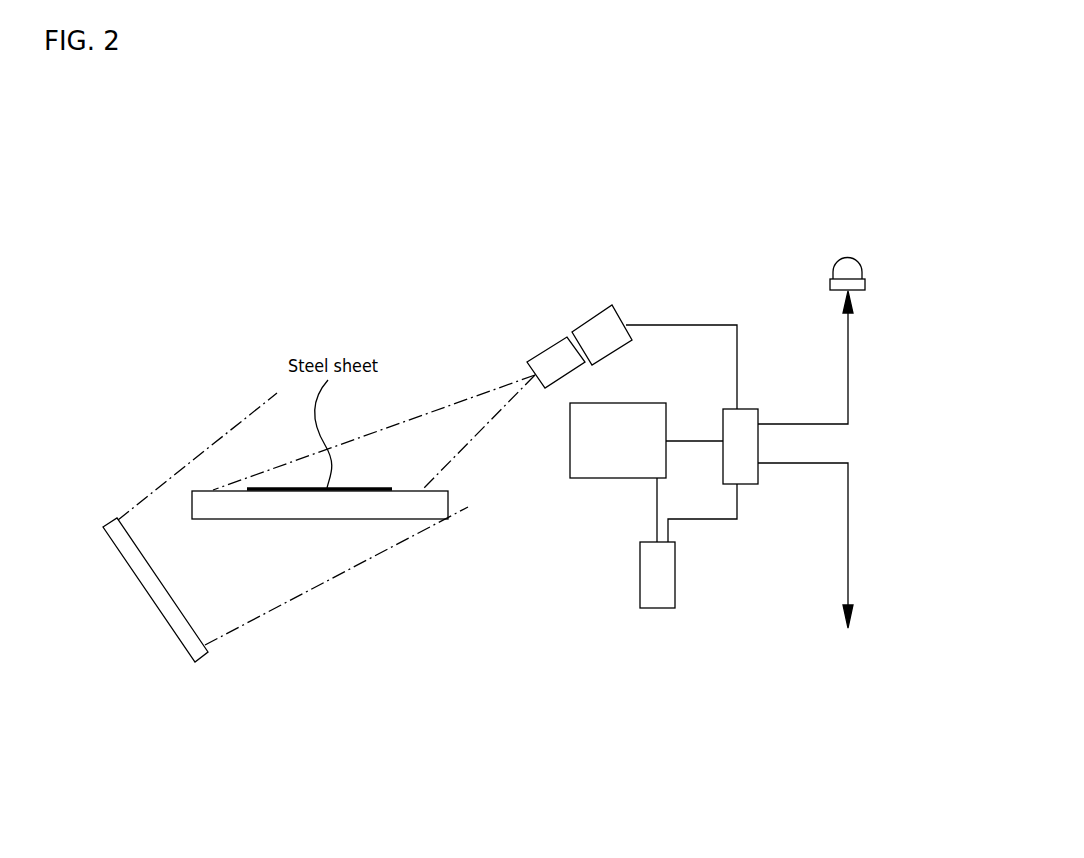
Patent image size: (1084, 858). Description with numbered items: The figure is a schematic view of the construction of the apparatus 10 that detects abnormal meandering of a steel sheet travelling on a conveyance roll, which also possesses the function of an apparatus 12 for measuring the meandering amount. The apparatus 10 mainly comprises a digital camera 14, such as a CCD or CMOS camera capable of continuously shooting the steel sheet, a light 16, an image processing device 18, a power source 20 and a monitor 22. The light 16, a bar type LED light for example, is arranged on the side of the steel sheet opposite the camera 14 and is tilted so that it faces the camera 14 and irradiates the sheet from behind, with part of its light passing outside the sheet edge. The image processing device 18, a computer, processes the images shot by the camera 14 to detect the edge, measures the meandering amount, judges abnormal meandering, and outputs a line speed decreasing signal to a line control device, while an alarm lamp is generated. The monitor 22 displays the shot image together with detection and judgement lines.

The apparatus for detecting abnormal meandering 10 is at (743, 247).
The apparatus for measuring meandering amount 12 is at (790, 463).
The digital camera 14 is at (585, 322).
The light 16 is at (172, 633).
The image processing device 18 is at (755, 456).
The power source 20 is at (672, 579).
The monitor 22 is at (629, 453).